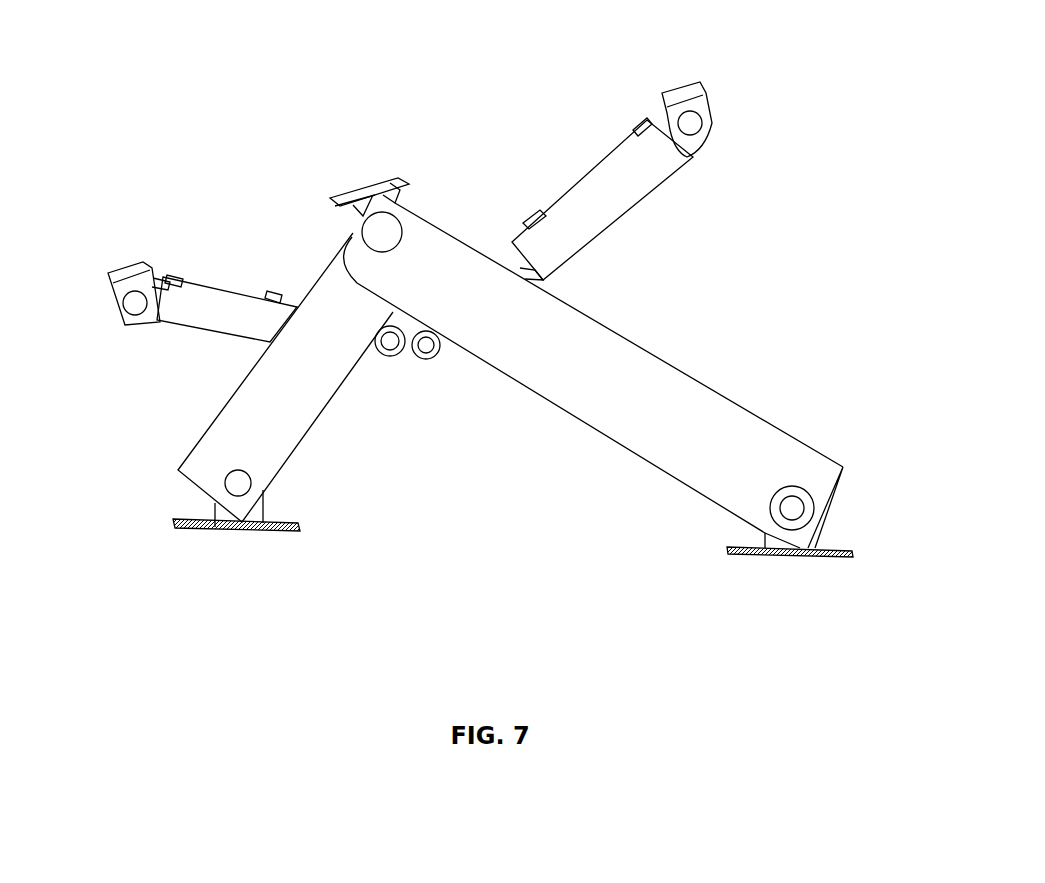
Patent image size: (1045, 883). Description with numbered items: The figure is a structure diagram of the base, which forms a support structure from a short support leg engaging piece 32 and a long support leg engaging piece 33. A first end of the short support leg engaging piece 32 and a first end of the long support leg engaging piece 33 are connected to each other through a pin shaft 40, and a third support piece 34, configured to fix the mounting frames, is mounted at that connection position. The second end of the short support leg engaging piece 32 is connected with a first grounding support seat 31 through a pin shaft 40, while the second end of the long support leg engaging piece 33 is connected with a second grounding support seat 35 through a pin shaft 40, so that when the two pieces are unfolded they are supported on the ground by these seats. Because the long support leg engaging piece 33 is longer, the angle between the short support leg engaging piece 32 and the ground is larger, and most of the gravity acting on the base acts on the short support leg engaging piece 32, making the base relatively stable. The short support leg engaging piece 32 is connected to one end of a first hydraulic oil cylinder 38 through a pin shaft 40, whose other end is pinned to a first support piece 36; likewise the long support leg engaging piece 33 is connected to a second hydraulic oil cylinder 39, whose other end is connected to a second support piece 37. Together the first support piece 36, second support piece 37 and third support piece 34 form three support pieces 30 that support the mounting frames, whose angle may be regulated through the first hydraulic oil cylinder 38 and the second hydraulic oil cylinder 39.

The support pieces 30 is at (118, 305).
The first grounding support seat 31 is at (217, 528).
The short support leg engaging piece 32 is at (260, 405).
The long support leg engaging piece 33 is at (698, 403).
The third support piece 34 is at (386, 190).
The second grounding support seat 35 is at (750, 548).
The first support piece 36 is at (138, 262).
The second support piece 37 is at (698, 105).
The first hydraulic oil cylinder 38 is at (250, 323).
The second hydraulic oil cylinder 39 is at (615, 212).
The pin shaft 40 is at (370, 232).